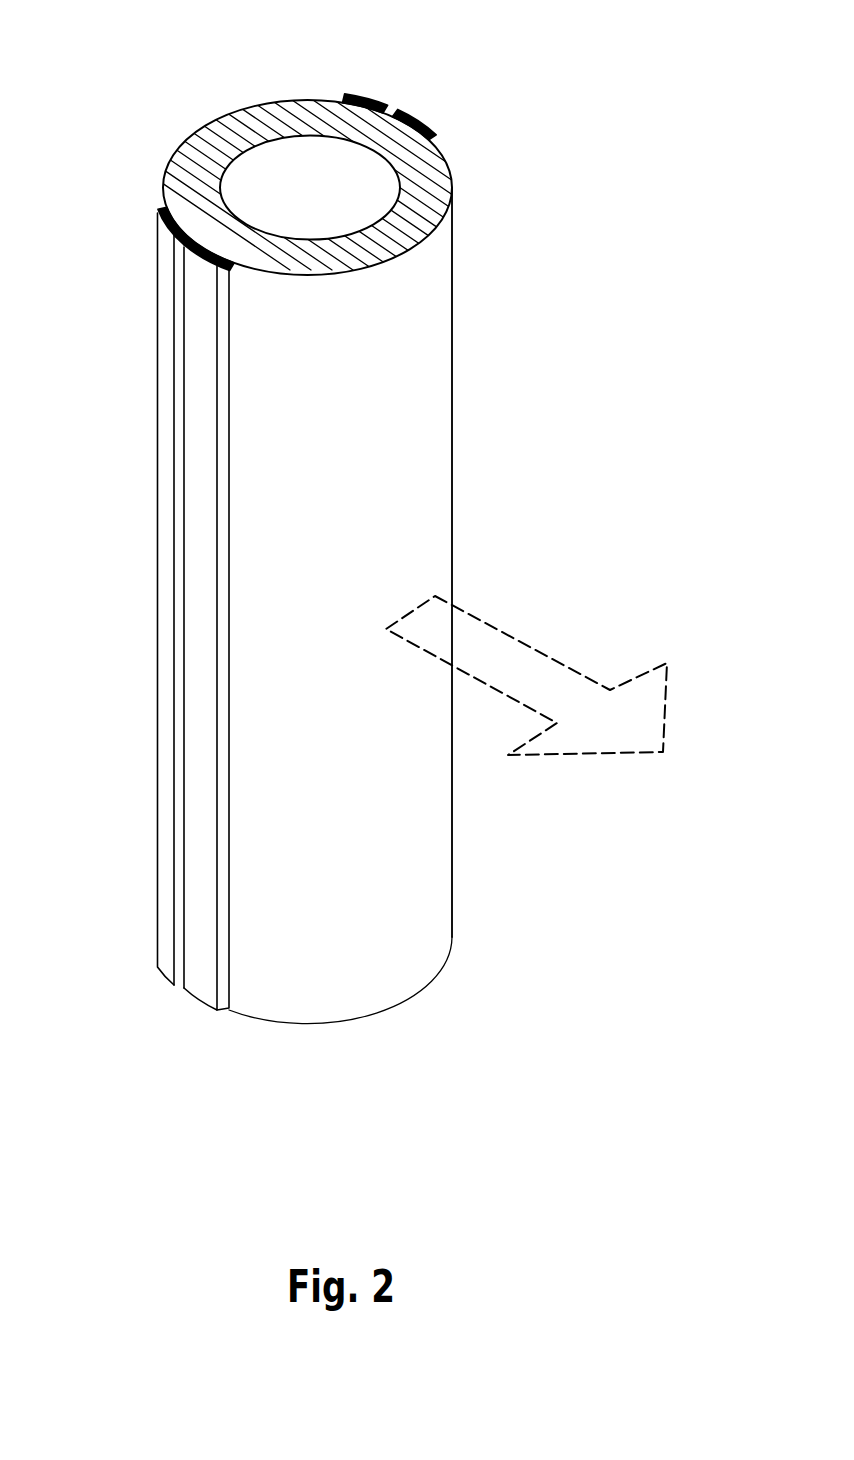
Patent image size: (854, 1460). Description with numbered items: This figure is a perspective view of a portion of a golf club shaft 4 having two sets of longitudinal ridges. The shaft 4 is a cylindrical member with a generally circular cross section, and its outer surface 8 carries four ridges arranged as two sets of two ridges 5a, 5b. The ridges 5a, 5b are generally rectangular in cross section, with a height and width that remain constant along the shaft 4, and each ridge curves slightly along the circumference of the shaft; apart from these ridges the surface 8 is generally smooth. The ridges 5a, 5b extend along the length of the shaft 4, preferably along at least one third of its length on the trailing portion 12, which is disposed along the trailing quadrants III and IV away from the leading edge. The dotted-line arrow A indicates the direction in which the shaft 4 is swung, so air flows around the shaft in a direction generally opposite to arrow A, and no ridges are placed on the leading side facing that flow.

The shaft 4 is at (432, 365).
The surface 8 is at (454, 283).
The trailing portion 12 is at (291, 100).
The longitudinal ridge 5a is at (400, 110).
The longitudinal ridge 5b is at (367, 95).
The arrow A is at (610, 754).